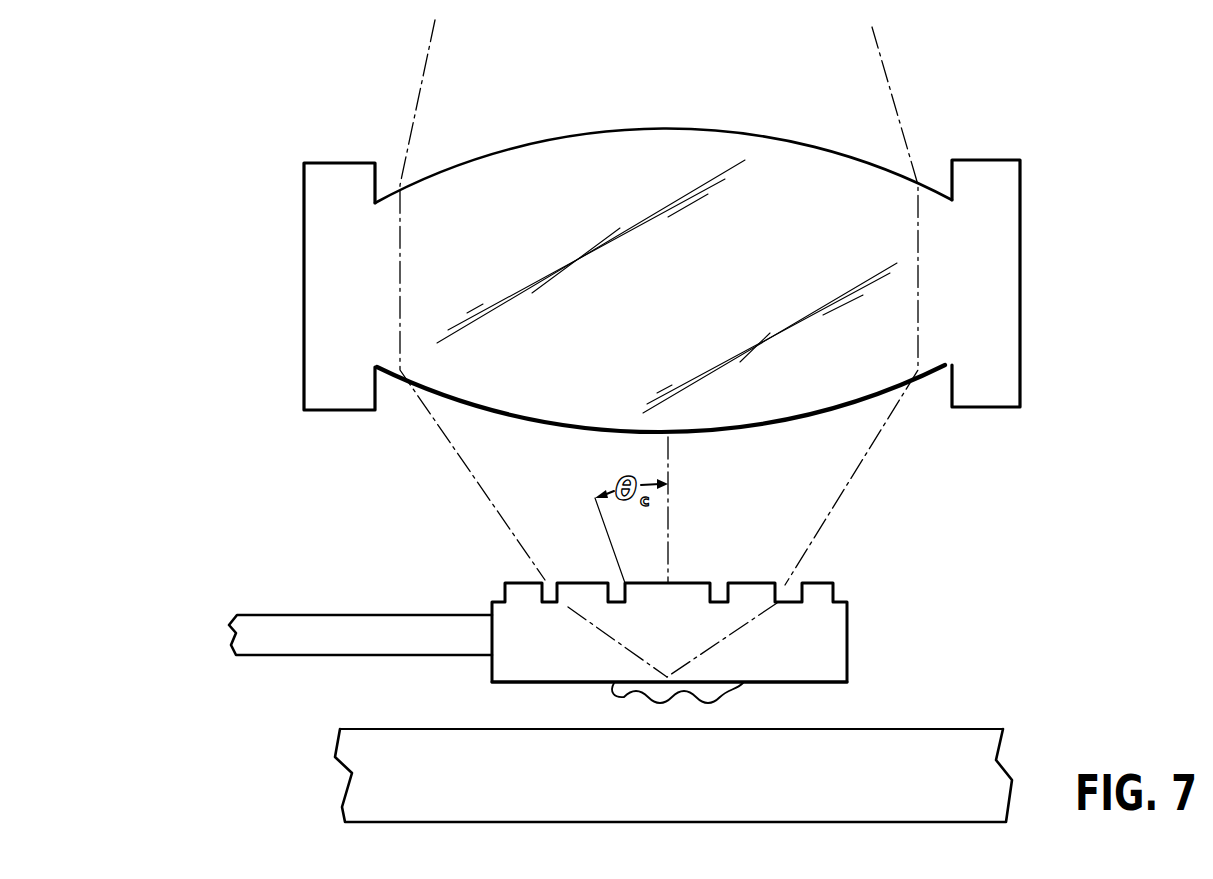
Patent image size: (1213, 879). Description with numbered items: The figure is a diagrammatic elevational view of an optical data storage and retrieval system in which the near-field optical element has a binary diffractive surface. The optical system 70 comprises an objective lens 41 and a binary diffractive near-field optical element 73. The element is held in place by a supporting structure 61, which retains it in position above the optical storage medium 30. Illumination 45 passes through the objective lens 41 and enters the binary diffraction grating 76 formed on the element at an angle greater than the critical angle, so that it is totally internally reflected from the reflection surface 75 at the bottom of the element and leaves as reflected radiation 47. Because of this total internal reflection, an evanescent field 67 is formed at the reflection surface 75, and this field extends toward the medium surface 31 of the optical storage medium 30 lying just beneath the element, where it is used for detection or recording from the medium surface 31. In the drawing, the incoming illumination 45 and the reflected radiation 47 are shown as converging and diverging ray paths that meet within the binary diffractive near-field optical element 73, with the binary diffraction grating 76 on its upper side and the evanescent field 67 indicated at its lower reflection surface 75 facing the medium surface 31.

The optical storage medium 30 is at (644, 759).
The medium surface 31 is at (438, 728).
The objective lens 41 is at (1022, 212).
The illumination 45 is at (433, 432).
The reflected radiation 47 is at (893, 430).
The supporting structure 61 is at (345, 614).
The evanescent field 67 is at (620, 693).
The optical system 70 is at (290, 465).
The binary diffractive near-field optical element 73 is at (849, 652).
The reflection surface 75 is at (834, 684).
The binary diffraction grating 76 is at (716, 627).